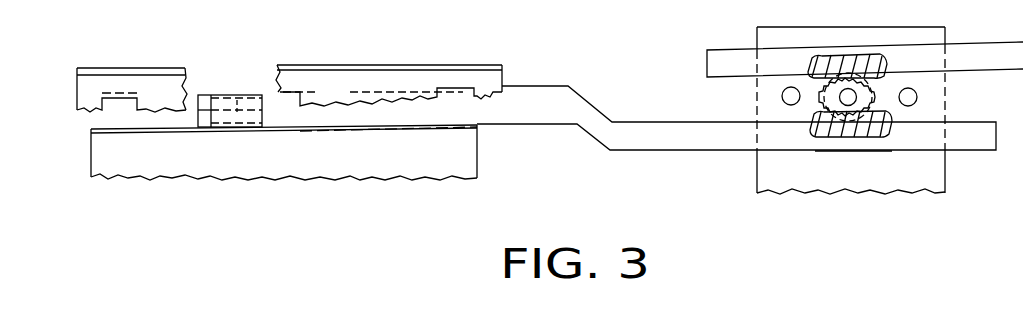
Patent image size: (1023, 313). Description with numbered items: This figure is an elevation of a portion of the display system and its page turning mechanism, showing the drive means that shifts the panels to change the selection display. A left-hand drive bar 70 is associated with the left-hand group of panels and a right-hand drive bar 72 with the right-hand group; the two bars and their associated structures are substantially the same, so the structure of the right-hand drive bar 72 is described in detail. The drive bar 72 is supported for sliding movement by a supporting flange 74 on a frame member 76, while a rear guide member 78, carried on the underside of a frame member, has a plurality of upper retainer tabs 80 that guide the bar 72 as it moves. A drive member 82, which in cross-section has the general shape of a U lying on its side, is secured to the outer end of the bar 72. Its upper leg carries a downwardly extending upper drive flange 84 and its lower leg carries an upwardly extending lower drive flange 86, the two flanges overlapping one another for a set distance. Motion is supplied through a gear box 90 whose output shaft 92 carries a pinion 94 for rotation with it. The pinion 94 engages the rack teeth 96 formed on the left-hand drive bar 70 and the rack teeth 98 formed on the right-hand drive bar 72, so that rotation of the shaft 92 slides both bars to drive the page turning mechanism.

The left-hand drive bar 70 is at (1000, 47).
The right-hand drive bar 72 is at (631, 137).
The supporting flange 74 is at (120, 132).
The frame member 76 is at (469, 153).
The rear guide member 78 is at (388, 87).
The upper retainer tabs 80 is at (463, 60).
The drive member 82 is at (232, 100).
The upper drive flange 84 is at (202, 95).
The lower drive flange 86 is at (230, 116).
The gear box 90 is at (878, 33).
The output shaft 92 is at (845, 97).
The pinion 94 is at (869, 79).
The rack teeth 96 is at (815, 73).
The rack teeth 98 is at (880, 111).